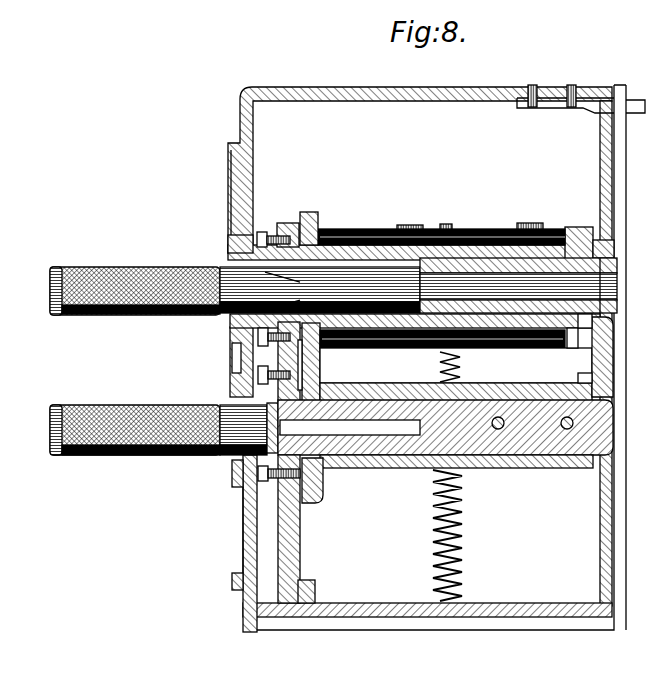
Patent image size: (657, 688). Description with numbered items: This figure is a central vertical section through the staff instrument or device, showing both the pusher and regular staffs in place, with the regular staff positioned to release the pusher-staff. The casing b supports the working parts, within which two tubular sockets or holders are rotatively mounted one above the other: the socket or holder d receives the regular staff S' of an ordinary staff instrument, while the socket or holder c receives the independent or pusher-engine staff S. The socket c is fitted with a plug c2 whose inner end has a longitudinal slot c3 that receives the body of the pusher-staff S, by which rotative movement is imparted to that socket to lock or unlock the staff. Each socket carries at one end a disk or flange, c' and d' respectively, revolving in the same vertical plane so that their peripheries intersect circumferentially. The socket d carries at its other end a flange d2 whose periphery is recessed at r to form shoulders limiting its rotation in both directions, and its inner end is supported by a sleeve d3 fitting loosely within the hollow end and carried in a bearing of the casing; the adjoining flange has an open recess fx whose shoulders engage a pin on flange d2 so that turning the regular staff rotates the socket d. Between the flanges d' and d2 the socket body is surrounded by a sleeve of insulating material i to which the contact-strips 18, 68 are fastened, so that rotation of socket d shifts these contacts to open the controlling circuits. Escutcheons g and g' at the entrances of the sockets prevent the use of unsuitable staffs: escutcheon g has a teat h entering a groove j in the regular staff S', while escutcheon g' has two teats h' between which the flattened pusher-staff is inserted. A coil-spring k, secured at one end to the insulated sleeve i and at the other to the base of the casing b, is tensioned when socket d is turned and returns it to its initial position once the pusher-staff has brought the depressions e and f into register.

The casing b is at (252, 537).
The socket or holder d is at (437, 226).
The disk or flange d' is at (311, 212).
The flange d2 is at (573, 227).
The sleeve d3 is at (494, 258).
The sleeve of insulating material i is at (463, 243).
The contact-strip 18 is at (406, 225).
The contact-strip 68 is at (524, 223).
The teat or projection h is at (244, 242).
The teats or projections h' is at (255, 428).
The escutcheon g is at (218, 233).
The escutcheon g' is at (211, 376).
The regular staff S' is at (235, 307).
The pusher-engine staff S is at (158, 445).
The groove j is at (228, 320).
The depression e is at (456, 365).
The depression f is at (318, 357).
The open recess fx is at (586, 330).
The recess r is at (569, 347).
The socket or holder c is at (445, 447).
The disk or flange c' is at (314, 495).
The plug c2 is at (577, 443).
The longitudinal slot c3 is at (390, 437).
The coil-spring k is at (458, 537).